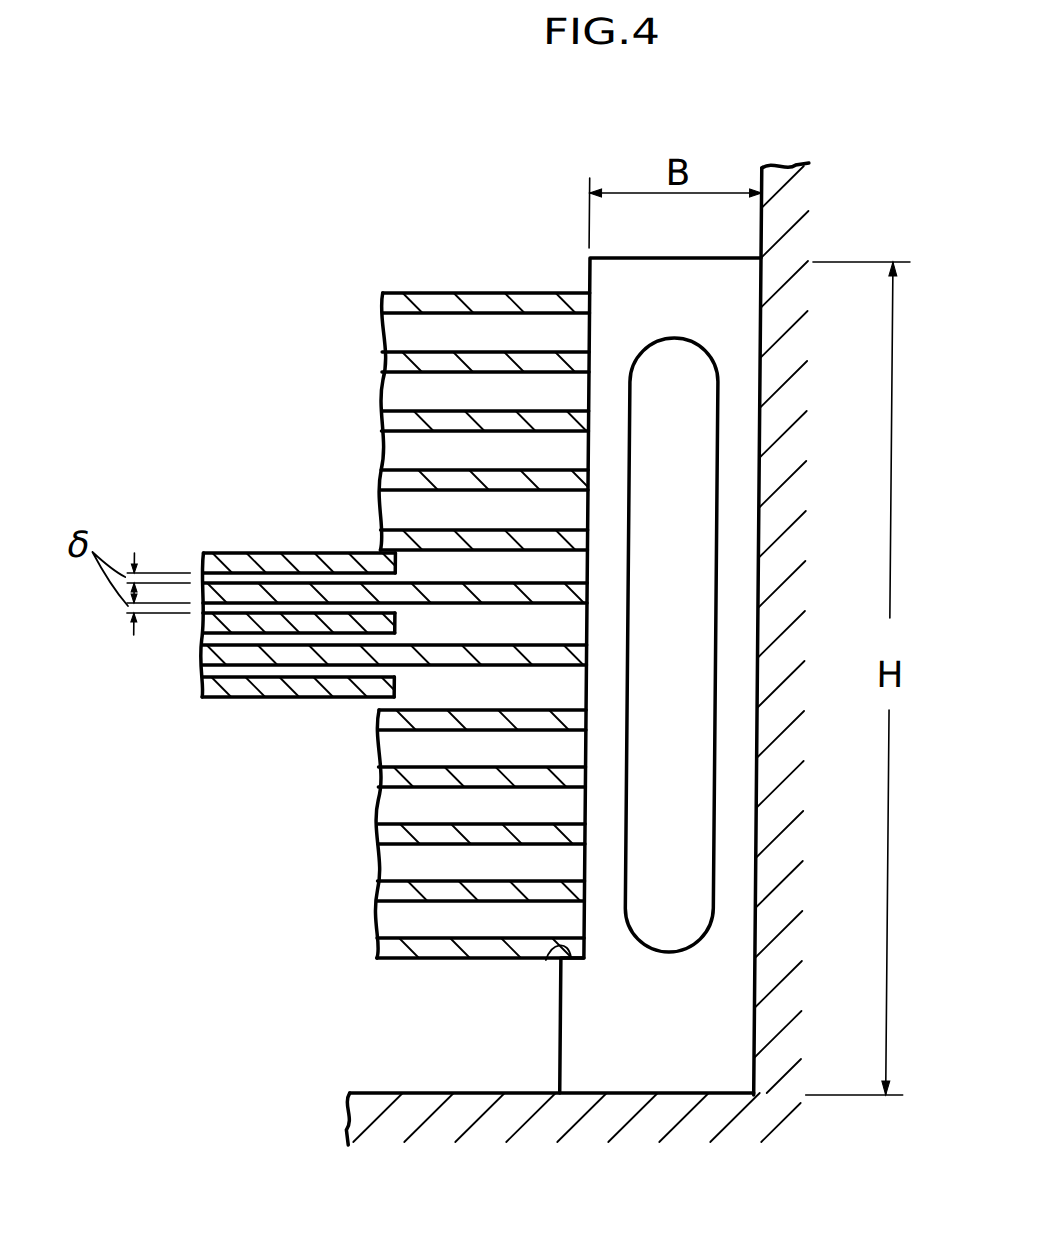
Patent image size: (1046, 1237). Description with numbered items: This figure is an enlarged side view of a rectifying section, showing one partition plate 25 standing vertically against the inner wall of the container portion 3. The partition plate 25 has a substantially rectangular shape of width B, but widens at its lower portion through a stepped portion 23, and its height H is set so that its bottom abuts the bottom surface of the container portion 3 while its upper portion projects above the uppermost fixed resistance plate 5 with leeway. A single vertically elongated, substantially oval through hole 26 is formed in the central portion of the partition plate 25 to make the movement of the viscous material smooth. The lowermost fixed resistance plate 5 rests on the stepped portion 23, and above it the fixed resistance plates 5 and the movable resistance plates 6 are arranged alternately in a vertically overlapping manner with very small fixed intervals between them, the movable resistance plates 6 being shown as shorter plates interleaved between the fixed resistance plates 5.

The container portion 3 is at (778, 470).
The fixed resistance plate 5 is at (402, 353).
The movable resistance plate 6 is at (245, 620).
The stepped portion 23 is at (552, 960).
The partition plate 25 is at (713, 280).
The through hole 26 is at (633, 538).